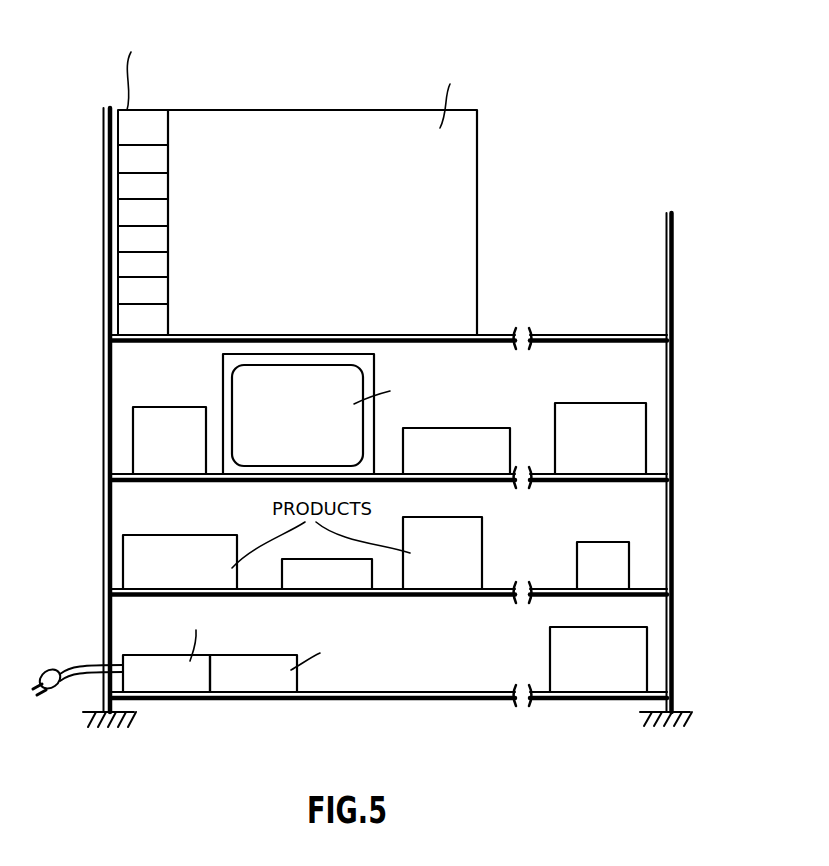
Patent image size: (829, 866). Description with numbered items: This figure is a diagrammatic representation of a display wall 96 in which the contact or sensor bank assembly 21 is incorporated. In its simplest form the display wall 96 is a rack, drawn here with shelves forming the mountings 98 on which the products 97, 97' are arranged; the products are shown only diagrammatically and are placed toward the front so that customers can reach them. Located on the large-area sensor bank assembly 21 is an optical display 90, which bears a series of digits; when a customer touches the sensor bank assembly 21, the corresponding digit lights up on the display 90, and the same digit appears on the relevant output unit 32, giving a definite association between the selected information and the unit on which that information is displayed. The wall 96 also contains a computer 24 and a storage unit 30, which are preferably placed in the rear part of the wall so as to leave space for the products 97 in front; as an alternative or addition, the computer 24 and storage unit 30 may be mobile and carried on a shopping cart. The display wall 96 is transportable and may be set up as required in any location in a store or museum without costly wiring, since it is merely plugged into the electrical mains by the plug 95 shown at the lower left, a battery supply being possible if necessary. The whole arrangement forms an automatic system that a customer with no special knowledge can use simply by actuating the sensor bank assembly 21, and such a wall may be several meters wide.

The optical display 90 is at (148, 110).
The contact or sensor bank assembly 21 is at (318, 240).
The display wall 96 is at (665, 275).
The mountings 98 is at (632, 344).
The output unit 32 is at (321, 424).
The products 97 is at (384, 496).
The products 97' is at (442, 553).
The computer 24 is at (185, 687).
The storage unit 30 is at (256, 687).
The power plug 95 is at (55, 672).